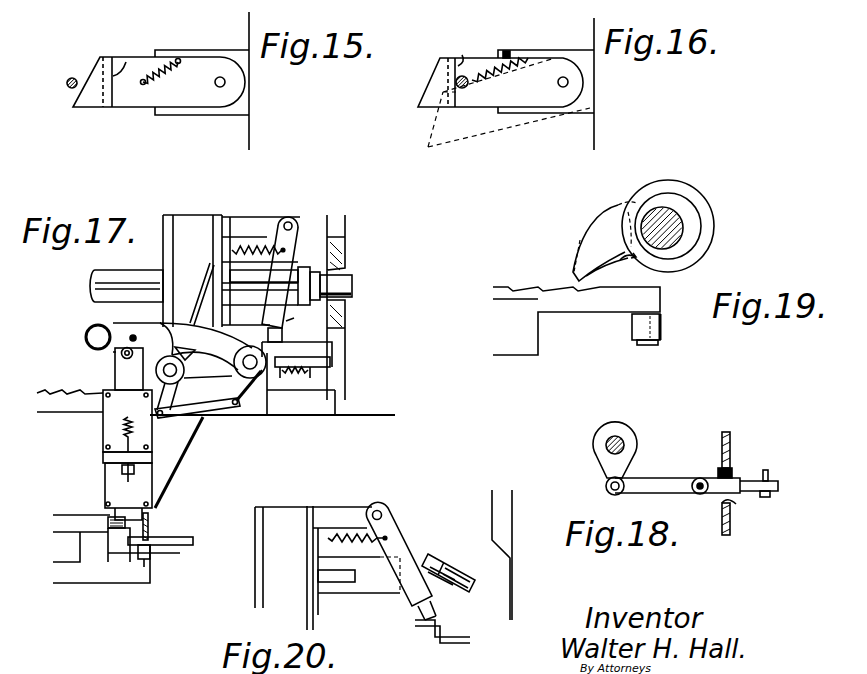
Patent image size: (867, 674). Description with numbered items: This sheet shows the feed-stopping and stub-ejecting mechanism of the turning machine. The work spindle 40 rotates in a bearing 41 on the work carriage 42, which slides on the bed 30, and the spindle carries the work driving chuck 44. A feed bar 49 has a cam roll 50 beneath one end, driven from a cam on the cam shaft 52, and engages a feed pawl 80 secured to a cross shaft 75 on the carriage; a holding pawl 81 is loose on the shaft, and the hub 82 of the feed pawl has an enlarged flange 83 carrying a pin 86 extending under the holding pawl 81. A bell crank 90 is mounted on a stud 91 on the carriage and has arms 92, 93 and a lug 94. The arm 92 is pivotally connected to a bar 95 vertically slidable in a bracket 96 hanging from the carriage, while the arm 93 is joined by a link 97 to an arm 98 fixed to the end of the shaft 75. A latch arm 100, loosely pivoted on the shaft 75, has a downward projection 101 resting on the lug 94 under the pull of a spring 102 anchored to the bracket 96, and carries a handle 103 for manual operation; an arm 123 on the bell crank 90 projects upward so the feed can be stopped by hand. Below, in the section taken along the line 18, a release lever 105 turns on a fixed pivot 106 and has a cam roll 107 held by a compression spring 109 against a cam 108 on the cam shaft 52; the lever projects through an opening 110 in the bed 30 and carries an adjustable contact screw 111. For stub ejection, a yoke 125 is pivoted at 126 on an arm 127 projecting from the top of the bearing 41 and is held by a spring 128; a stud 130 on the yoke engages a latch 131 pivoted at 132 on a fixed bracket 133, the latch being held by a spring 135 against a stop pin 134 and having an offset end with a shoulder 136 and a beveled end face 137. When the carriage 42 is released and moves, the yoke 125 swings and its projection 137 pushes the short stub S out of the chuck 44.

In FIG. 17, the section line 18 is at (92, 614).
In FIG. 19, the bed 30 is at (530, 355).
In FIG. 18, the bed 30 is at (731, 448).
In FIG. 17, the work spindle 40 is at (115, 270).
In FIG. 17, the bearing 41 is at (170, 238).
In FIG. 20, the bearing 41 is at (260, 569).
In FIG. 17, the work carriage 42 is at (263, 418).
In FIG. 17, the work driving chuck 44 is at (260, 287).
In FIG. 20, the work driving chuck 44 is at (348, 594).
In FIG. 19, the feed bar 49 is at (596, 306).
In FIG. 19, the cam roll 50 is at (668, 326).
In FIG. 18, the cam shaft 52 is at (626, 441).
In FIG. 17, the cross shaft 75 is at (262, 369).
In FIG. 19, the cross shaft 75 is at (684, 223).
In FIG. 19, the feed pawl 80 is at (592, 245).
In FIG. 19, the holding pawl 81 is at (613, 216).
In FIG. 19, the hub 82 is at (690, 240).
In FIG. 19, the flange 83 is at (699, 201).
In FIG. 19, the pin 86 is at (616, 265).
In FIG. 17, the bell crank 90 is at (190, 382).
In FIG. 17, the stud 91 is at (162, 368).
In FIG. 17, the arm 92 is at (124, 378).
In FIG. 17, the arm 93 is at (178, 395).
In FIG. 17, the lug 94 is at (188, 362).
In FIG. 17, the bar 95 is at (119, 356).
In FIG. 17, the bracket 96 is at (150, 488).
In FIG. 17, the link 97 is at (180, 420).
In FIG. 17, the arm 98 is at (262, 394).
In FIG. 17, the latch arm 100 is at (118, 330).
In FIG. 17, the downward projection 101 is at (163, 326).
In FIG. 17, the spring 102 is at (127, 455).
In FIG. 17, the handle 103 is at (88, 337).
In FIG. 18, the release lever 105 is at (664, 481).
In FIG. 18, the fixed pivot 106 is at (696, 495).
In FIG. 18, the cam roll 107 is at (606, 487).
In FIG. 18, the cam 108 is at (593, 447).
In FIG. 17, the compression spring 109 is at (107, 523).
In FIG. 18, the compression spring 109 is at (734, 470).
In FIG. 18, the opening 110 is at (732, 513).
In FIG. 17, the adjustable contact screw 111 is at (150, 529).
In FIG. 18, the adjustable contact screw 111 is at (772, 477).
In FIG. 17, the arm 123 is at (200, 295).
In FIG. 17, the yoke 125 is at (290, 260).
In FIG. 20, the yoke 125 is at (398, 548).
In FIG. 17, the pivot 126 is at (293, 223).
In FIG. 20, the pivot 126 is at (386, 516).
In FIG. 17, the arm 127 is at (265, 217).
In FIG. 20, the arm 127 is at (357, 512).
In FIG. 17, the spring 128 is at (258, 238).
In FIG. 20, the spring 128 is at (346, 536).
In FIG. 15, the stud 130 is at (66, 84).
In FIG. 16, the stud 130 is at (466, 78).
In FIG. 17, the stud 130 is at (268, 332).
In FIG. 20, the stud 130 is at (418, 610).
In FIG. 15, the latch 131 is at (128, 105).
In FIG. 16, the latch 131 is at (478, 104).
In FIG. 17, the latch 131 is at (298, 352).
In FIG. 20, the latch 131 is at (447, 641).
In FIG. 15, the pivot 132 is at (225, 82).
In FIG. 16, the pivot 132 is at (568, 82).
In FIG. 15, the fixed bracket 133 is at (217, 57).
In FIG. 16, the fixed bracket 133 is at (566, 58).
In FIG. 17, the fixed bracket 133 is at (332, 362).
In FIG. 15, the stop pin 134 is at (164, 58).
In FIG. 16, the stop pin 134 is at (507, 52).
In FIG. 15, the spring 135 is at (196, 84).
In FIG. 16, the spring 135 is at (535, 86).
In FIG. 15, the shoulder 136 is at (126, 62).
In FIG. 16, the shoulder 136 is at (460, 56).
In FIG. 15, the beveled end face 137 is at (92, 72).
In FIG. 16, the beveled end face 137 is at (438, 62).
In FIG. 17, the beveled end face 137 is at (292, 322).
In FIG. 20, the beveled end face 137 is at (434, 589).
In FIG. 17, the stub S is at (353, 288).
In FIG. 20, the stub S is at (445, 560).